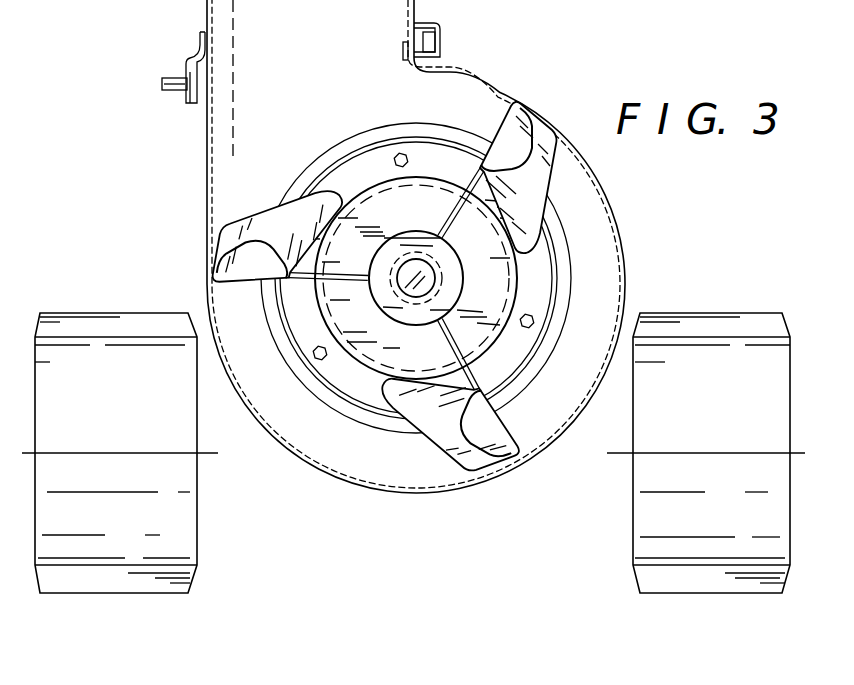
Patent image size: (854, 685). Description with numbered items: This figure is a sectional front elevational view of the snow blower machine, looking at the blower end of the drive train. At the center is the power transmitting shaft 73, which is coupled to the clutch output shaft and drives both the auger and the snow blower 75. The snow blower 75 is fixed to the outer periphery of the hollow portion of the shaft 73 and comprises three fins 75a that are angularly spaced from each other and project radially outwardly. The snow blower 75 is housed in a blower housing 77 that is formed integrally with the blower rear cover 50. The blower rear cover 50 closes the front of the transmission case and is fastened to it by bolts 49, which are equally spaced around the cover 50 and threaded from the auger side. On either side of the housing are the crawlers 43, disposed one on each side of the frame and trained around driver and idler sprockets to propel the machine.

The crawlers 43 is at (647, 543).
The bolts 49 is at (399, 150).
The blower rear cover 50 is at (556, 248).
The power transmitting shaft 73 is at (434, 278).
The snow blower 75 is at (370, 503).
The fins 75a is at (541, 136).
The blower housing 77 is at (307, 467).